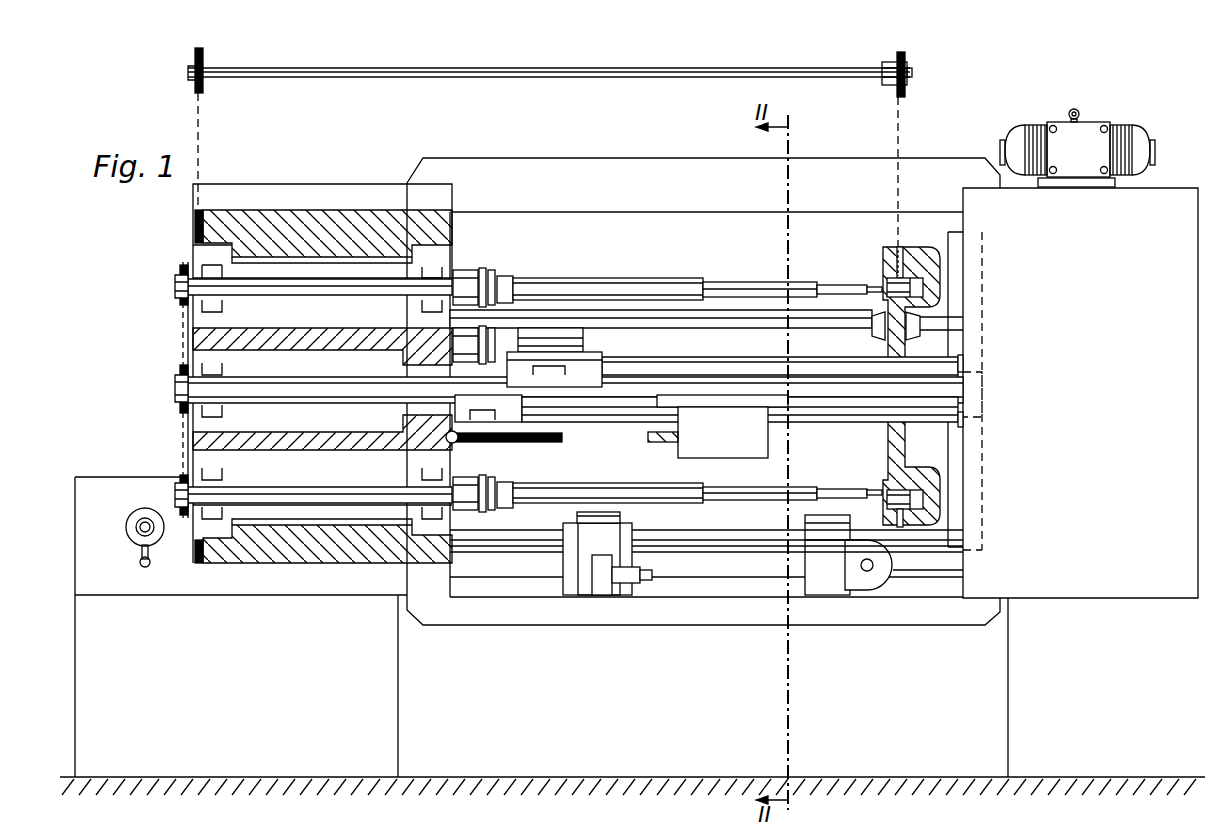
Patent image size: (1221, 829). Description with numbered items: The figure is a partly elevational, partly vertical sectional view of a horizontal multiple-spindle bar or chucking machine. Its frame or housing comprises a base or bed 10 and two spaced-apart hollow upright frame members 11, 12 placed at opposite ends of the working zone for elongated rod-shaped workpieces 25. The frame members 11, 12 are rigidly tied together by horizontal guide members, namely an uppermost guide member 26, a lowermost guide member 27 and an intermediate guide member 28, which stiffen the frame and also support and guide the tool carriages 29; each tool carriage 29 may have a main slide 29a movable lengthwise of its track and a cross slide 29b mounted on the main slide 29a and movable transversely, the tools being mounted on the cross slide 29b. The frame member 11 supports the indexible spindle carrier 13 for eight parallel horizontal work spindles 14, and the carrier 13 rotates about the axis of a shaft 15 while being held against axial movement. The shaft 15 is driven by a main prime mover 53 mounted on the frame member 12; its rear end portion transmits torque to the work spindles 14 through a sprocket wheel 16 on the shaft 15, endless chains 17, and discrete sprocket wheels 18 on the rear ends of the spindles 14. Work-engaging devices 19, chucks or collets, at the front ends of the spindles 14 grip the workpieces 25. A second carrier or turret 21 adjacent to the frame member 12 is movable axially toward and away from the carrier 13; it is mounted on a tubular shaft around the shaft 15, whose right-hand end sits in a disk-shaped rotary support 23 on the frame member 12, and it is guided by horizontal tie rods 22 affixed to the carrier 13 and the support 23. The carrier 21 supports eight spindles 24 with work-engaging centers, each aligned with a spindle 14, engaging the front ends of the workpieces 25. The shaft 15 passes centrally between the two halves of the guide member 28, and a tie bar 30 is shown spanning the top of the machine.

The base or bed 10 is at (628, 757).
The upright frame member 11 is at (300, 197).
The upright frame member 12 is at (1155, 200).
The spindle carrier 13 is at (205, 332).
The work spindle 14 is at (290, 283).
The shaft 15 is at (310, 385).
The sprocket wheel 16 is at (183, 410).
The endless chain 17 is at (185, 326).
The sprocket wheel 18 is at (178, 262).
The work-engaging device 19 is at (500, 275).
The second carrier or turret 21 is at (925, 248).
The tie rod 22 is at (683, 312).
The rotary support 23 is at (948, 590).
The spindle 24 is at (881, 277).
The workpiece 25 is at (642, 280).
The uppermost guide member 26 is at (619, 171).
The lowermost guide member 27 is at (523, 612).
The intermediate guide member 28 is at (715, 357).
The tool carriage 29 is at (553, 332).
The main slide 29a is at (620, 527).
The cross slide 29b is at (583, 585).
The tie bar 30 is at (447, 80).
The main prime mover 53 is at (1087, 130).